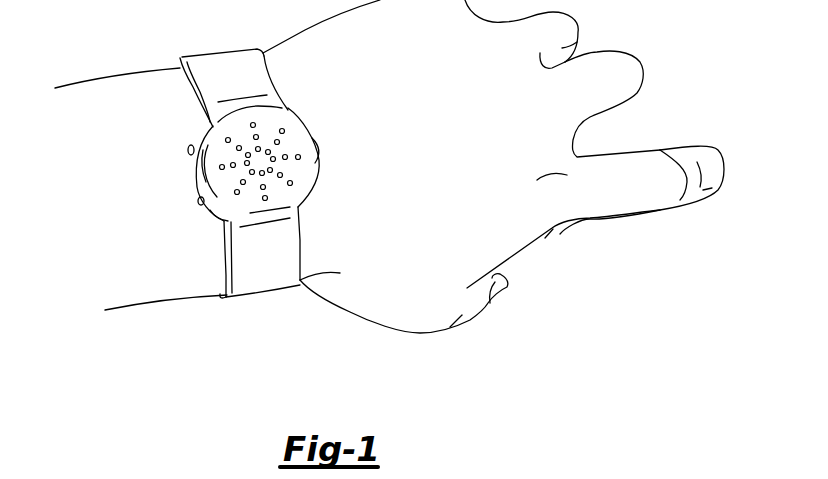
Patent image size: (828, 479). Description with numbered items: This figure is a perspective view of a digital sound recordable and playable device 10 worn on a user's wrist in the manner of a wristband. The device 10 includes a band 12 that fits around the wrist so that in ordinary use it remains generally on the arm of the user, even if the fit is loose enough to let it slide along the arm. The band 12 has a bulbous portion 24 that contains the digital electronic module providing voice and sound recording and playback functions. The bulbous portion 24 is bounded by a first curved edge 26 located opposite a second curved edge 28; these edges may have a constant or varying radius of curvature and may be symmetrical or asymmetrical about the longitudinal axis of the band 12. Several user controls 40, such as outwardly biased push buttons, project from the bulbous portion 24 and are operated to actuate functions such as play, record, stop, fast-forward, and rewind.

The digital sound recordable and playable device 10 is at (253, 205).
The band 12 is at (245, 292).
The bulbous portion 24 is at (203, 119).
The first curved edge 26 is at (222, 210).
The second curved edge 28 is at (317, 191).
The user controls 40 is at (188, 150).